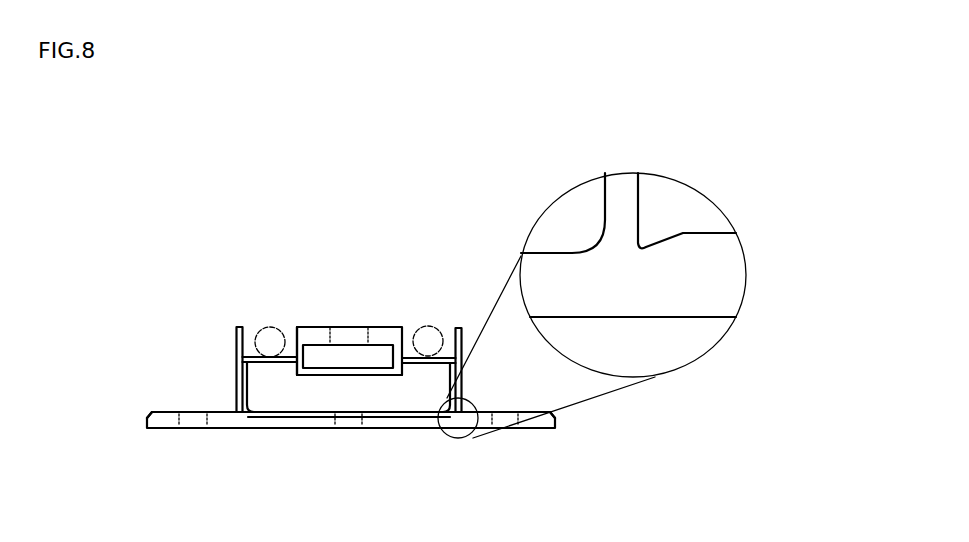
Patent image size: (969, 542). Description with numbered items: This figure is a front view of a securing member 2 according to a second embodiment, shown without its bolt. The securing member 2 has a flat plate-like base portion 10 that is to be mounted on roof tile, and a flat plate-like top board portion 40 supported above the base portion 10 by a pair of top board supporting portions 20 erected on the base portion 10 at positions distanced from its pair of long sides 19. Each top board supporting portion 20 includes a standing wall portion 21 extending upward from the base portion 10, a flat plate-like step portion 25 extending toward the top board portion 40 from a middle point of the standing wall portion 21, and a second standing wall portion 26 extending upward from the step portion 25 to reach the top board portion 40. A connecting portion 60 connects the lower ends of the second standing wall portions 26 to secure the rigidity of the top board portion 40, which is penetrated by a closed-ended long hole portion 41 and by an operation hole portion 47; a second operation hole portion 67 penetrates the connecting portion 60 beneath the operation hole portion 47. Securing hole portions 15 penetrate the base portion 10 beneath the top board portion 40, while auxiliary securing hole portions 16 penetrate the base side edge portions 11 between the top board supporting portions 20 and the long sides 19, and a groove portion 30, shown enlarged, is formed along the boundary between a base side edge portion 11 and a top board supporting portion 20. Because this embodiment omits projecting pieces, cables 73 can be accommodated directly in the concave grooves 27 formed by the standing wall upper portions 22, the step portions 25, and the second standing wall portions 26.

The securing member 2 is at (233, 163).
The base portion 10 is at (232, 431).
The base side edge portion 11 is at (165, 411).
The securing hole portion 15 is at (355, 429).
The auxiliary securing hole portion 16 is at (181, 430).
The long side 19 is at (147, 421).
The top board supporting portion 20 is at (237, 310).
The standing wall portion 21 is at (237, 378).
The standing wall upper portion 22 is at (237, 337).
The step portion 25 is at (256, 330).
The second standing wall portion 26 is at (292, 333).
The concave groove 27 is at (290, 349).
The groove portion 30 is at (641, 247).
The top board portion 40 is at (320, 326).
The long hole portion 41 is at (362, 326).
The operation hole portion 47 is at (383, 331).
The connecting portion 60 is at (375, 377).
The second operation hole portion 67 is at (310, 414).
The cable 73 is at (428, 326).